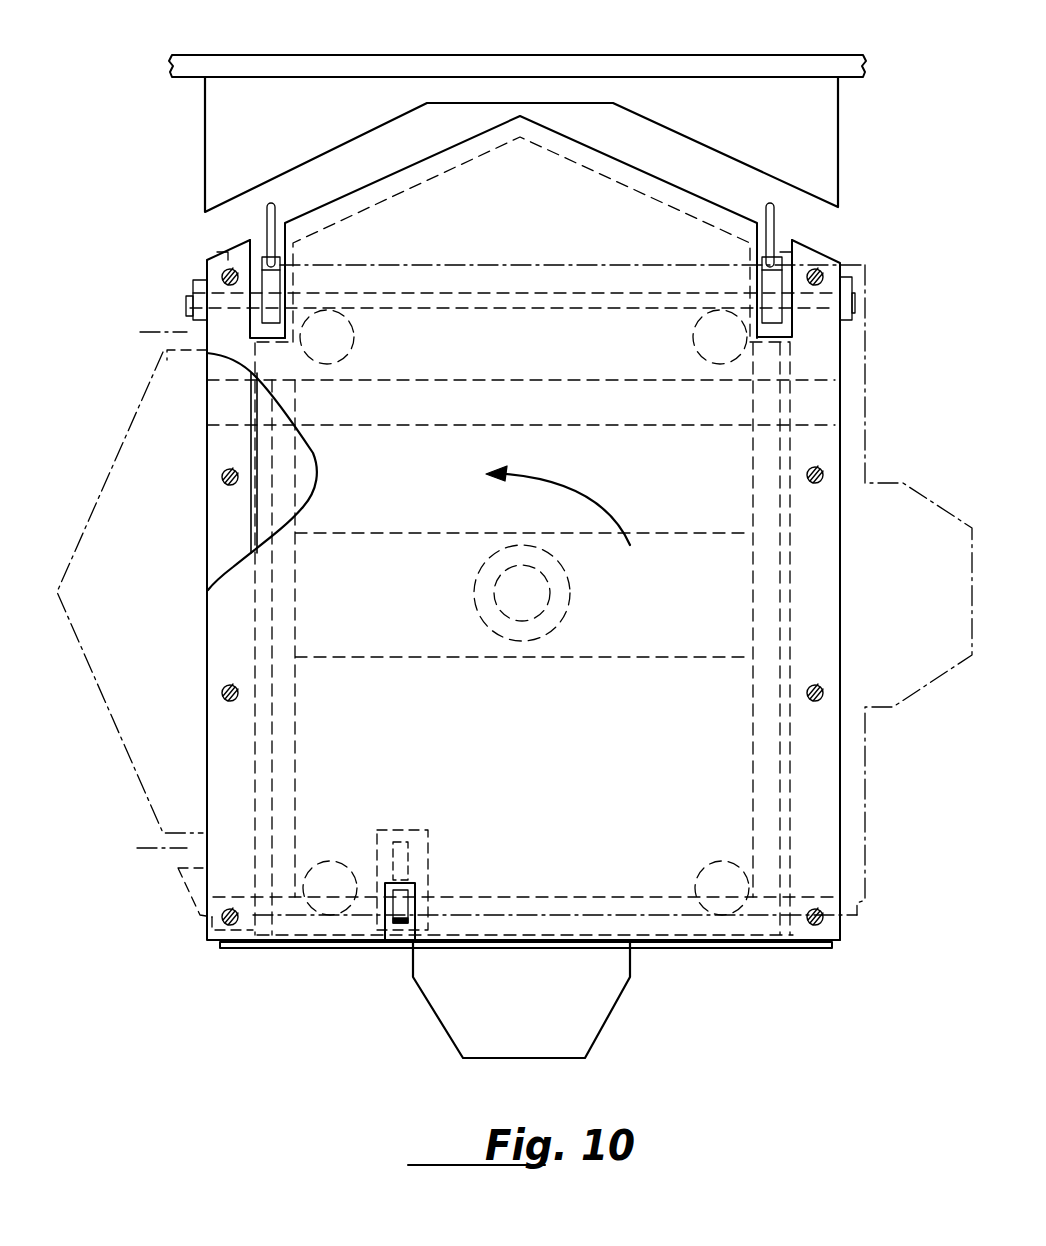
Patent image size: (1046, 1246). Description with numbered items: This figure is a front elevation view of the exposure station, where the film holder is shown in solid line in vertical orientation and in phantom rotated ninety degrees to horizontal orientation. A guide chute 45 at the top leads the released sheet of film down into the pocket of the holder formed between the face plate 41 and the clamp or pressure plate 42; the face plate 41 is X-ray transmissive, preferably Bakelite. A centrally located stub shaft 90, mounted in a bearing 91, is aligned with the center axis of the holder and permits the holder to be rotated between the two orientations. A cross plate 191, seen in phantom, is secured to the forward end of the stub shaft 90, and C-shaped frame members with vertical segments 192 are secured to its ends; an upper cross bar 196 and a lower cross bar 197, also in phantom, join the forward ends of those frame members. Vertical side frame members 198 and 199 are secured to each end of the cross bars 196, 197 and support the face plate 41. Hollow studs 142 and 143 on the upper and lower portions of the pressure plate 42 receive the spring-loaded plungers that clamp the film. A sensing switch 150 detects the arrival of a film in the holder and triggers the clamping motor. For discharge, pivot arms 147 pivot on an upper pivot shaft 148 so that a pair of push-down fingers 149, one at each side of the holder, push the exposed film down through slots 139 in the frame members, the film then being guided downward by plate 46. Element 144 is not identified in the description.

The face plate 41 is at (503, 528).
The clamp or pressure plate 42 is at (262, 465).
The guide chute 45 is at (378, 100).
The guide plate 46 is at (583, 1005).
The stub shaft 90 is at (495, 592).
The bearing 91 is at (568, 593).
The slots 139 is at (255, 238).
The upper hollow stud 142 is at (350, 340).
The lower hollow stud 143 is at (333, 870).
The base plate 144 is at (720, 948).
The pivot arm 147 is at (270, 300).
The upper pivot shaft 148 is at (512, 302).
The push-down fingers 149 is at (268, 213).
The sensing switch 150 is at (400, 885).
The cross plate 191 is at (446, 660).
The vertical segment 192 is at (288, 793).
The upper cross bar 196 is at (450, 425).
The lower cross bar 197 is at (545, 888).
The vertical side frame member 198 is at (223, 522).
The vertical side frame member 199 is at (842, 562).